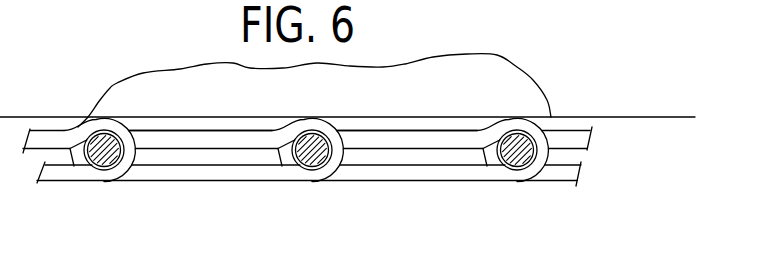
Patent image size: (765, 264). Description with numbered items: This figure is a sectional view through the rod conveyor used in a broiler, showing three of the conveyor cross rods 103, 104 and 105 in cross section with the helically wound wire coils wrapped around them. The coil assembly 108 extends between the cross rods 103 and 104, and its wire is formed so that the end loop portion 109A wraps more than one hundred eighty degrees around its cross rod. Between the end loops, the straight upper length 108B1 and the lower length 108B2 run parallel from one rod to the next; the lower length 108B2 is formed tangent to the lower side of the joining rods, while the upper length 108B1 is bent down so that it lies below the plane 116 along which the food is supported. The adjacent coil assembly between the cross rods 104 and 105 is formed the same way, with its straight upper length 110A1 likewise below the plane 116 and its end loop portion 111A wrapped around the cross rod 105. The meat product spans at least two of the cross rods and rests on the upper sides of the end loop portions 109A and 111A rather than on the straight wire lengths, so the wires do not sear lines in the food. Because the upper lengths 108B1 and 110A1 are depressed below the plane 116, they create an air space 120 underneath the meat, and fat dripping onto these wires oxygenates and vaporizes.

The cross rod 103 is at (99, 136).
The cross rod 104 is at (316, 154).
The cross rod 105 is at (531, 146).
The coil assembly 108 is at (307, 135).
The straight upper length 108B1 is at (165, 131).
The lower length 108B2 is at (253, 181).
The end loop portion 109A is at (302, 124).
The straight upper length 110A1 is at (385, 131).
The end loop portion 111A is at (520, 121).
The plane 116 is at (630, 117).
The air space 120 is at (232, 128).